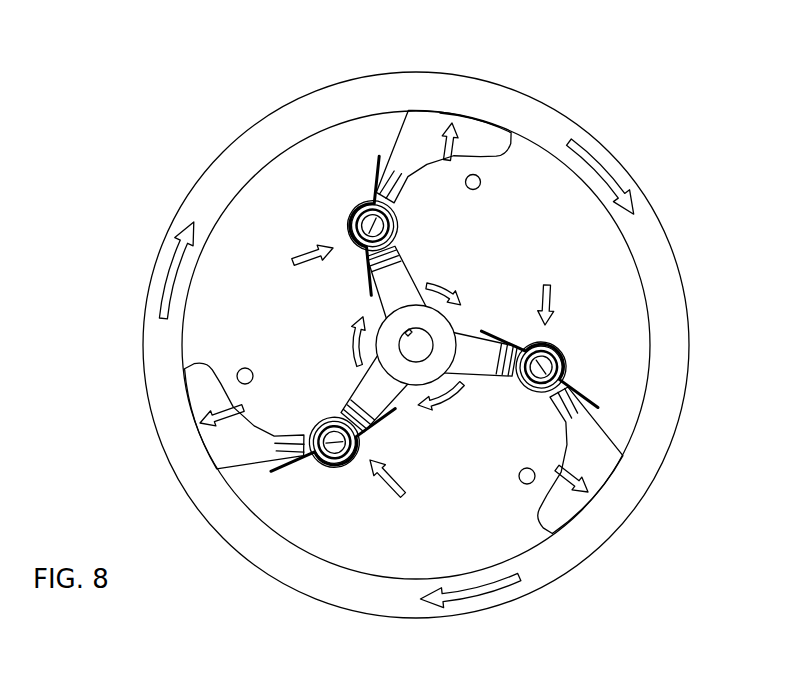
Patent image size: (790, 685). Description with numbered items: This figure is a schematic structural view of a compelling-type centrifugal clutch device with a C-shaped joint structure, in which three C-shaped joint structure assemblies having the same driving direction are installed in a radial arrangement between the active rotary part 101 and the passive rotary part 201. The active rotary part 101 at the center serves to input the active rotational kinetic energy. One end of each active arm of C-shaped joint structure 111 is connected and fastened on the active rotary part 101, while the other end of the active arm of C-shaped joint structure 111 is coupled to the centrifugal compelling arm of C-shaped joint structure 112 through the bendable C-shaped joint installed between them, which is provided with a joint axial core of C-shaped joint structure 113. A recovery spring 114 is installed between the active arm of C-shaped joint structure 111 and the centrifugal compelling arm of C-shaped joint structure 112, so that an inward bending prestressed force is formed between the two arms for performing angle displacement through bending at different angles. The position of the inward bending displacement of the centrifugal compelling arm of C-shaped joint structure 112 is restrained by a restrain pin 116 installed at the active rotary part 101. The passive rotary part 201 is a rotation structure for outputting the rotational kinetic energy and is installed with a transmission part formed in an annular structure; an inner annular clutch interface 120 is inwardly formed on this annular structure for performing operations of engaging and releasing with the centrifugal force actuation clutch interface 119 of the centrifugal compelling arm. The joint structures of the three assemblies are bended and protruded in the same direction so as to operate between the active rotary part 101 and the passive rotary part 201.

The active rotary part 101 is at (425, 338).
The active arm of C-shaped joint structure 111 is at (412, 287).
The centrifugal compelling arm of C-shaped joint structure 112 is at (393, 138).
The joint axial core of C-shaped joint structure 113 is at (353, 226).
The recovery spring 114 is at (363, 262).
The restrain pin 116 is at (477, 190).
The centrifugal force actuation clutch interface 119 is at (468, 117).
The inner annular clutch interface 120 is at (624, 262).
The passive rotary part 201 is at (257, 148).